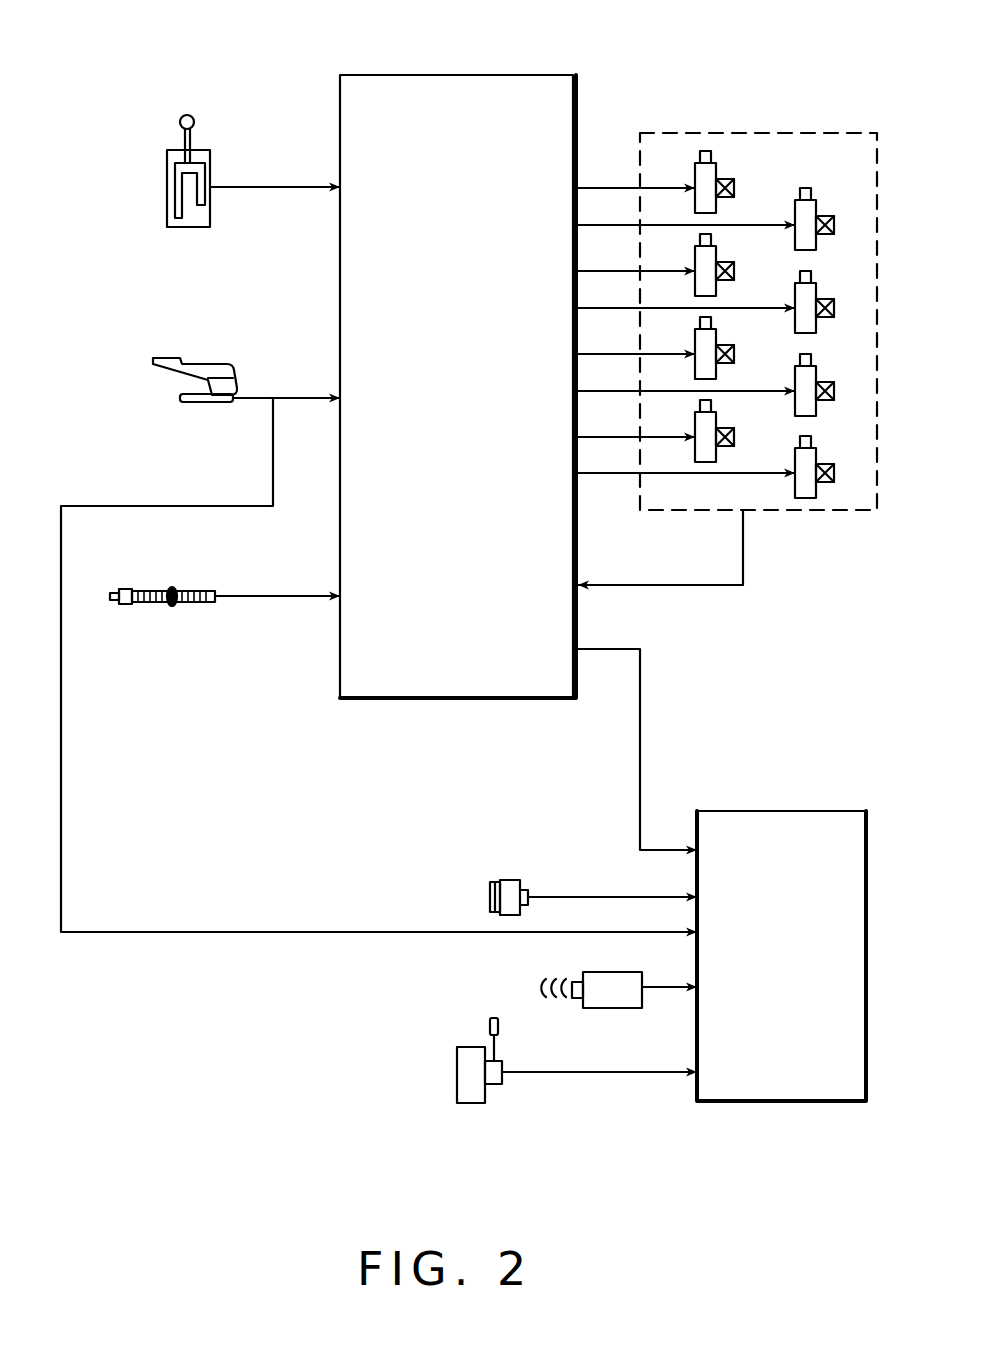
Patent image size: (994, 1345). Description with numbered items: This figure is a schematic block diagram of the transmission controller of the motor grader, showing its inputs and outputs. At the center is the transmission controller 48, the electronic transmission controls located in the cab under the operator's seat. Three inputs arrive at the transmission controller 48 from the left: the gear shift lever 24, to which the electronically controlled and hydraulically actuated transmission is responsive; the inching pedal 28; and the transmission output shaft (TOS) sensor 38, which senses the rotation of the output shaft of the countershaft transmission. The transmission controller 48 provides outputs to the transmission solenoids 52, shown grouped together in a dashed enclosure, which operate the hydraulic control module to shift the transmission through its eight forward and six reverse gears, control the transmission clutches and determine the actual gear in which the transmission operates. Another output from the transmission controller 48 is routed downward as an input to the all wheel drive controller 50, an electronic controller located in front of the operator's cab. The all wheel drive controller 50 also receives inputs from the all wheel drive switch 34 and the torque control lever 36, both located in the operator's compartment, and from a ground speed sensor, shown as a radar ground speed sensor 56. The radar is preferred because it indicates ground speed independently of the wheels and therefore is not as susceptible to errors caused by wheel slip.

The gear shift lever 24 is at (182, 118).
The inching pedal 28 is at (205, 362).
The all wheel drive switch 34 is at (482, 893).
The torque control lever 36 is at (490, 1016).
The transmission output shaft (TOS) sensor 38 is at (152, 590).
The transmission controller 48 is at (500, 75).
The all wheel drive controller 50 is at (787, 815).
The transmission solenoids 52 is at (763, 132).
The radar ground speed sensor 56 is at (575, 982).